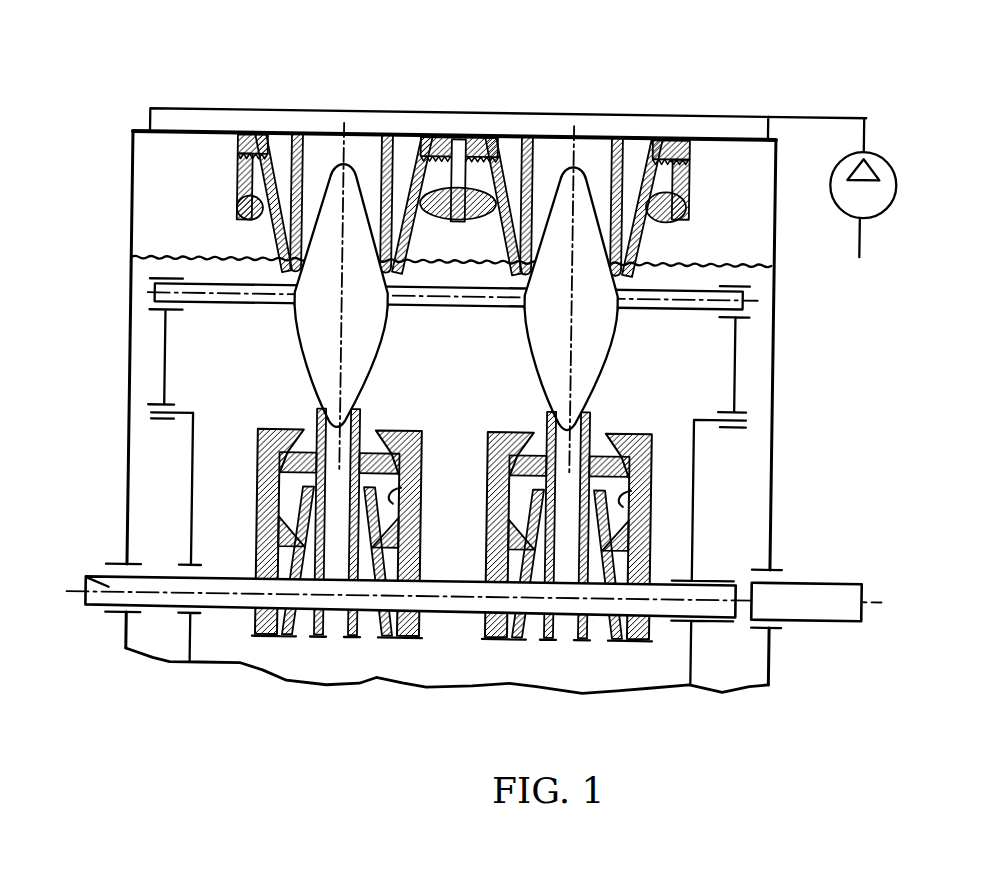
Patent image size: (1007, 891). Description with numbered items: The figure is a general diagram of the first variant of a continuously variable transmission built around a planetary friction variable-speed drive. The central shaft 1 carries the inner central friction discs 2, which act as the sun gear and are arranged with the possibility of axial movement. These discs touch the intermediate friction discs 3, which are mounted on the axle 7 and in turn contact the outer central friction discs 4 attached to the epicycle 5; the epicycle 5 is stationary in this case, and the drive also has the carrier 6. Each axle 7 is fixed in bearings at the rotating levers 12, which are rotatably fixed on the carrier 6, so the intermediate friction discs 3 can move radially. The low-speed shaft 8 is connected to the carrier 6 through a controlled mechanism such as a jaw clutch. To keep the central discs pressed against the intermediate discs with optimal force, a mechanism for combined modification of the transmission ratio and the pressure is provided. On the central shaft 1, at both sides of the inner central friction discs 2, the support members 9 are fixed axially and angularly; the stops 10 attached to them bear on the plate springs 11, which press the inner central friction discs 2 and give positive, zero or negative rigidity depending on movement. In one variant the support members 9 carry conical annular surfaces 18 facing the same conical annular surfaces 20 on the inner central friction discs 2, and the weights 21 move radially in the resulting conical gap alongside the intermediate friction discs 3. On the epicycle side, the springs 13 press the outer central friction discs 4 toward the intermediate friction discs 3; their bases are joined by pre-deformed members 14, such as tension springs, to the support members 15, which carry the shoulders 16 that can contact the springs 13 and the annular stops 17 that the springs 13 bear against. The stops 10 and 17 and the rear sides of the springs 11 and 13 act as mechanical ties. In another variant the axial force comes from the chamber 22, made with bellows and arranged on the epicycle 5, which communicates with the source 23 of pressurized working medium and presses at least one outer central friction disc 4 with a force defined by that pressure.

The central shaft 1 is at (103, 582).
The inner central friction discs 2 is at (316, 410).
The intermediate friction discs 3 is at (320, 326).
The outer central friction discs 4 is at (318, 155).
The epicycle 5 is at (776, 323).
The carrier 6 is at (696, 527).
The axle 7 is at (157, 283).
The low-speed shaft 8 is at (803, 573).
The support members 9 is at (250, 565).
The stops 10 is at (262, 525).
The plate springs 11 is at (362, 637).
The rotating levers 12 is at (742, 352).
The springs 13 is at (285, 175).
The pre-deformed members 14 is at (404, 143).
The support members 15 is at (238, 183).
The shoulders 16 is at (245, 130).
The annular stops 17 is at (257, 220).
The conical annular surfaces 18 is at (390, 502).
The conical annular surfaces 20 is at (305, 430).
The weights 21 is at (402, 427).
The chamber 22 is at (142, 170).
The source of the pressurized working medium 23 is at (841, 199).